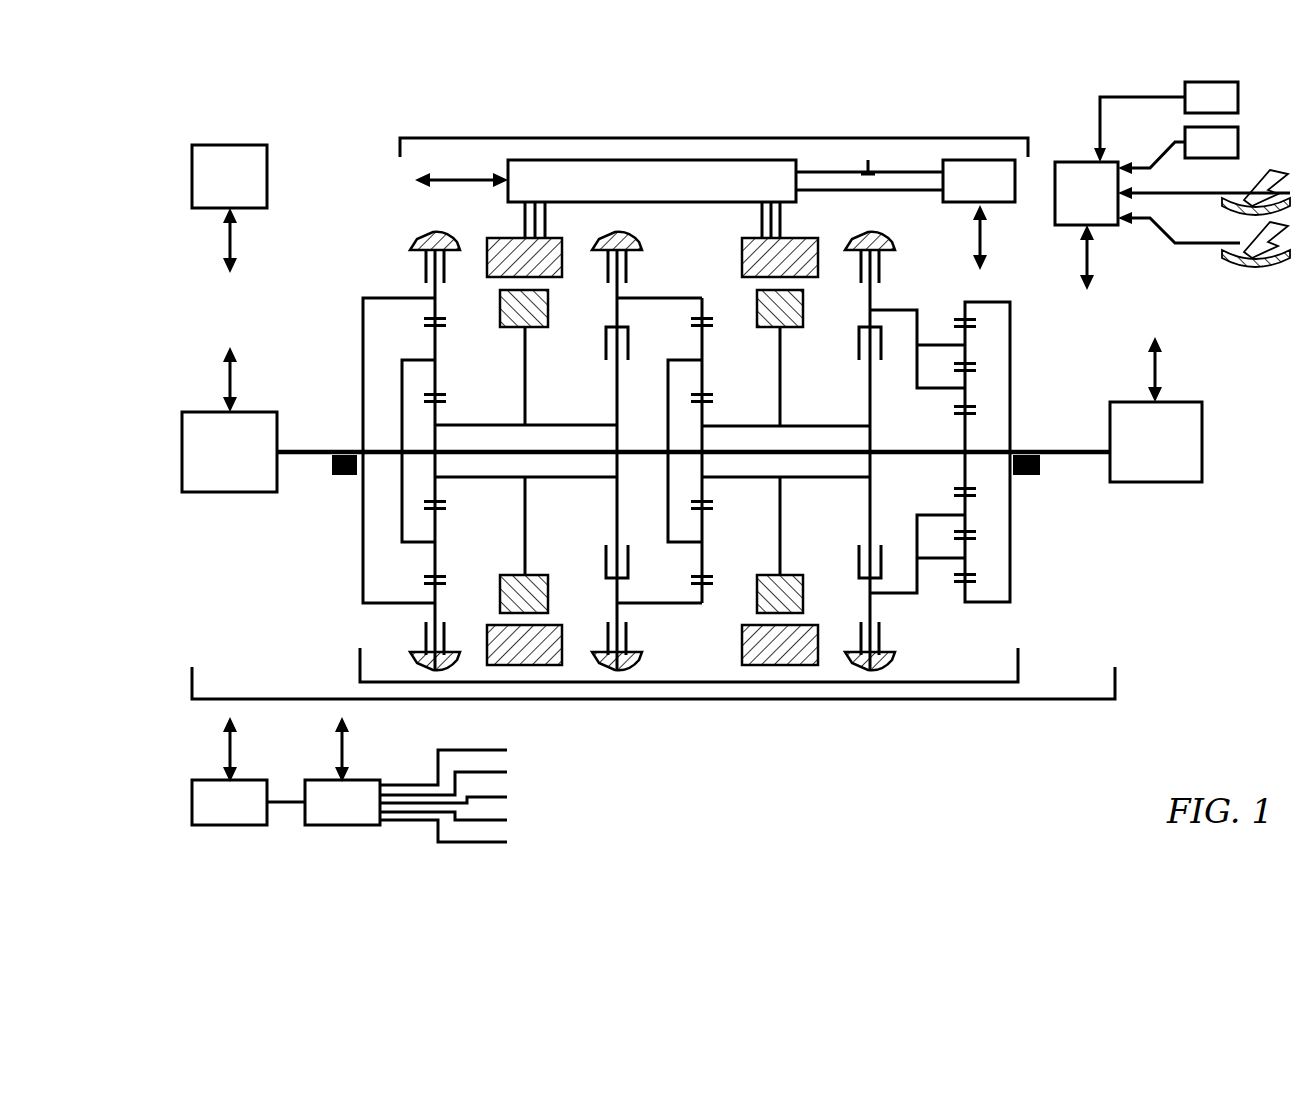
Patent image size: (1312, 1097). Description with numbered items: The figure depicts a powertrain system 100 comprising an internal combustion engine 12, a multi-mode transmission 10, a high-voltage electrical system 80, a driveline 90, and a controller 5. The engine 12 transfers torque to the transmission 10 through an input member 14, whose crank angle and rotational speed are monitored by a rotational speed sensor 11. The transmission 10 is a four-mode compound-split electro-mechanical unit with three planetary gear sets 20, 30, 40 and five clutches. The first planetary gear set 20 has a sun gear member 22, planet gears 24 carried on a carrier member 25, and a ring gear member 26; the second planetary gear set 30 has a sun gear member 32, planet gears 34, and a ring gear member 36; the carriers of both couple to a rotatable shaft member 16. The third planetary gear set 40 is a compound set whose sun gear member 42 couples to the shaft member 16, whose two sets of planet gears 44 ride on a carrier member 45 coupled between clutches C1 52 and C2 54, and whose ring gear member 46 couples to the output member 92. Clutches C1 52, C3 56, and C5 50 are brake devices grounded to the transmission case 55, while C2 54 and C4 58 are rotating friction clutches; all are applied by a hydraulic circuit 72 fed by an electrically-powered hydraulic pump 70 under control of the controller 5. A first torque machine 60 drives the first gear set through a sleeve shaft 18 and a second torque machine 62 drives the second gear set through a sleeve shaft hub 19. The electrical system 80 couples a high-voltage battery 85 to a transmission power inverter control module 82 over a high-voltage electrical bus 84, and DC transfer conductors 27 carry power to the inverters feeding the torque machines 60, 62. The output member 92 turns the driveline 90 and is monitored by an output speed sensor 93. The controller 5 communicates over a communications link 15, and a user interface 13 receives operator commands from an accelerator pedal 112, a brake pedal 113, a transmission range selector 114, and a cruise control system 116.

The controller 5 is at (229, 176).
The multi-mode transmission 10 is at (812, 682).
The rotational speed sensor 11 is at (345, 478).
The internal combustion engine 12 is at (229, 452).
The user interface 13 is at (1086, 193).
The input member 14 is at (312, 455).
The communications link 15 is at (680, 470).
The rotatable shaft member 16 is at (625, 452).
The sleeve shaft 18 is at (562, 425).
The sleeve shaft hub 19 is at (825, 425).
The first planetary gear set 20 is at (447, 491).
The sun gear member 22 is at (440, 410).
The planet gears 24 is at (438, 368).
The carrier member 25 is at (405, 425).
The ring gear member 26 is at (440, 320).
The DC transfer conductors 27 is at (548, 223).
The second planetary gear set 30 is at (706, 542).
The sun gear member 32 is at (710, 410).
The planet gears 34 is at (705, 368).
The ring gear member 36 is at (704, 318).
The third planetary gear set 40 is at (971, 462).
The sun gear member 42 is at (968, 490).
The planet gears 44 is at (968, 515).
The carrier member 45 is at (920, 315).
The ring gear member 46 is at (960, 590).
The clutch C5 50 is at (425, 272).
The clutch C1 52 is at (882, 272).
The clutch C2 54 is at (860, 352).
The transmission case 55 is at (420, 238).
The clutch C3 56 is at (628, 268).
The clutch C4 58 is at (607, 352).
The first torque machine 60 is at (552, 291).
The second torque machine 62 is at (808, 291).
The electrically-powered hydraulic pump 70 is at (248, 802).
The hydraulic circuit 72 is at (419, 797).
The high-voltage electrical system 80 is at (722, 138).
The transmission power inverter control module 82 is at (652, 181).
The high-voltage electrical bus 84 is at (900, 172).
The high-voltage battery 85 is at (979, 181).
The driveline 90 is at (1156, 442).
The output member 92 is at (1062, 450).
The transmission output speed sensor 93 is at (1040, 470).
The powertrain system 100 is at (722, 700).
The accelerator pedal 112 is at (1250, 247).
The operator brake pedal 113 is at (1252, 196).
The transmission range selector 114 is at (1178, 150).
The vehicle speed cruise control system 116 is at (1166, 122).